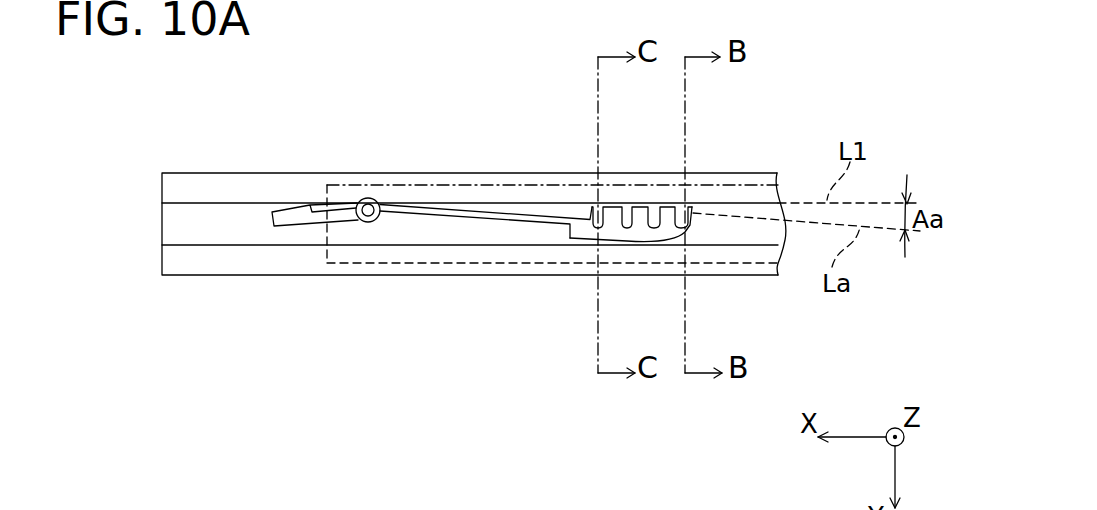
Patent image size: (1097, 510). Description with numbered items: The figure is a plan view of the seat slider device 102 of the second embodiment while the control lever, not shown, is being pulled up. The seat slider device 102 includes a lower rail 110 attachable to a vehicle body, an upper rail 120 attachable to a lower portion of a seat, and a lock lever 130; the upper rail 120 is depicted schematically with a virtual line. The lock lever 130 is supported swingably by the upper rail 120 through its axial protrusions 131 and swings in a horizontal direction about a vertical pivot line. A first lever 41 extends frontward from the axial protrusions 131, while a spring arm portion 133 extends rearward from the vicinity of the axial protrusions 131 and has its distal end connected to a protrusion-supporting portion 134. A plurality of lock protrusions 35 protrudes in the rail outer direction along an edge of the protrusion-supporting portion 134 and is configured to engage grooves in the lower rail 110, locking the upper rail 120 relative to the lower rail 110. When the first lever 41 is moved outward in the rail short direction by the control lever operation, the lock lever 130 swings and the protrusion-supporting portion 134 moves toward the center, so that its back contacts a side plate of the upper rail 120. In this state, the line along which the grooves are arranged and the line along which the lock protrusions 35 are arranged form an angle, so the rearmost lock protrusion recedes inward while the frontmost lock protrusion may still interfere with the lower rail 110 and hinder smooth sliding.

The seat slider device 102 is at (160, 142).
The lower rail 110 is at (205, 270).
The upper rail 120 is at (337, 265).
The first lever 41 is at (278, 210).
The axial protrusions 131 is at (364, 198).
The lock lever 130 is at (602, 222).
The spring arm portion 133 is at (505, 222).
The protrusion-supporting portion 134 is at (628, 238).
The lock protrusions 35 is at (590, 211).